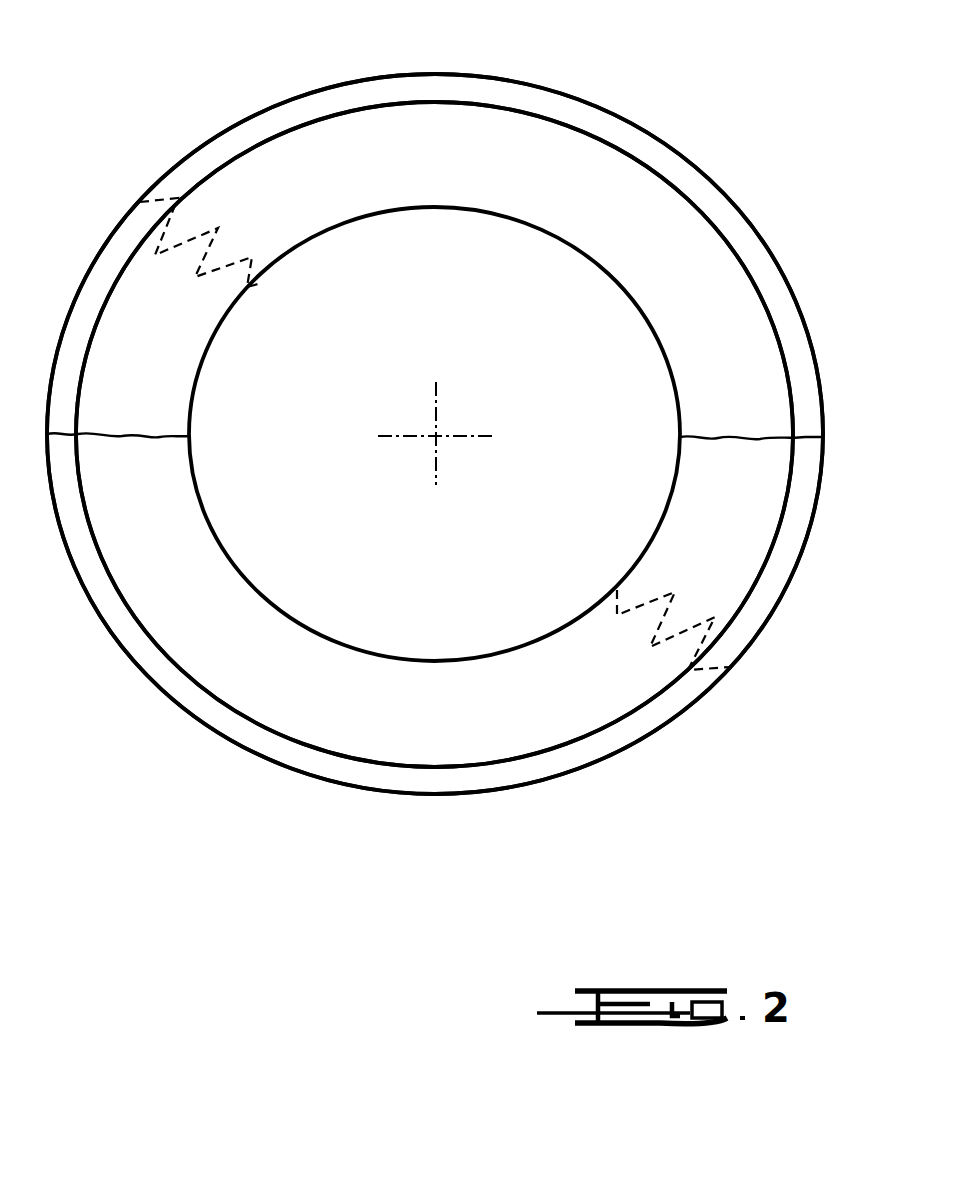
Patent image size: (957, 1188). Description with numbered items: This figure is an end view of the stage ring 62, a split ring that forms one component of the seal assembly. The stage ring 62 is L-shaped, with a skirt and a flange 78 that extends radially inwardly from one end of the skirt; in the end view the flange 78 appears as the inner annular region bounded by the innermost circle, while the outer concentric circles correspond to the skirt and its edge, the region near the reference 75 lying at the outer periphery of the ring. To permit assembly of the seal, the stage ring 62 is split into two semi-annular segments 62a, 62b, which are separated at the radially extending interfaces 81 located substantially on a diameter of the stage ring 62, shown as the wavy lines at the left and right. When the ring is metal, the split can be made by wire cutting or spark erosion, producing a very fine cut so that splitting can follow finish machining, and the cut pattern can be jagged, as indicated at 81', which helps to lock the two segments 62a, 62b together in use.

The stage ring 62 is at (640, 93).
The semi-annular segment 62a is at (718, 212).
The semi-annular segment 62b is at (760, 617).
The lens edge bevel 75 is at (177, 683).
The flange 78 is at (253, 630).
The radially extending interfaces 81 is at (435, 456).
The jagged cut pattern 81' is at (387, 406).